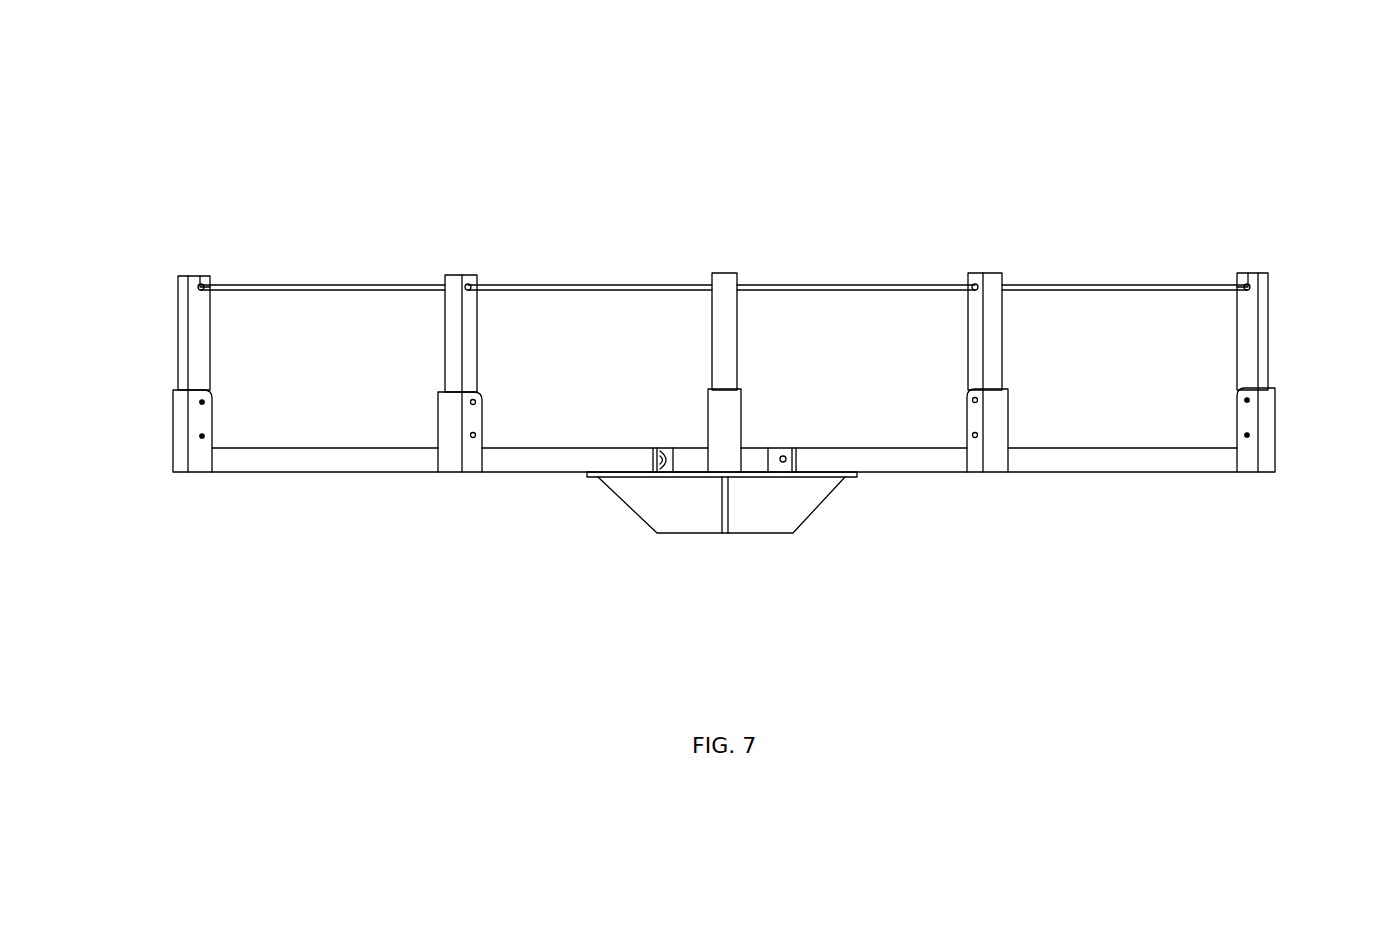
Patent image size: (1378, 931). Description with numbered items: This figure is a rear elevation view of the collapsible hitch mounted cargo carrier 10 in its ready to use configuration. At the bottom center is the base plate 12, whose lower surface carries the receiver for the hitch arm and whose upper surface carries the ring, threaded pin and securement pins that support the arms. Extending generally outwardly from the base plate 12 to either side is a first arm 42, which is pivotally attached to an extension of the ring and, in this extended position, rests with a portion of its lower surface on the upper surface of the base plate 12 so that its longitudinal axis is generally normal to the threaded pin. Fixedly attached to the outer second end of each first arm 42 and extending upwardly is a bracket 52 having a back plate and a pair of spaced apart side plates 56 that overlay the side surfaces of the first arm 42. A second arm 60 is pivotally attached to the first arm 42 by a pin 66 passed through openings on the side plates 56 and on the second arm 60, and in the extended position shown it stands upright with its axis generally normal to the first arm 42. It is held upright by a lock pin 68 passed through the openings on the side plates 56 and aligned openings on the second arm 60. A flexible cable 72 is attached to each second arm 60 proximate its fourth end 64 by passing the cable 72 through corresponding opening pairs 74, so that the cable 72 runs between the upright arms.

The collapsible hitch mounted cargo carrier 10 is at (348, 126).
The base plate 12 is at (590, 502).
The first arm 42 is at (318, 490).
The bracket 52 is at (131, 441).
The side plate 56 is at (197, 457).
The second arm 60 is at (154, 326).
The fourth end 64 is at (178, 281).
The pin 66 is at (205, 436).
The lock pin 68 is at (199, 402).
The flexible cable 72 is at (857, 283).
The opening pairs 74 is at (201, 282).